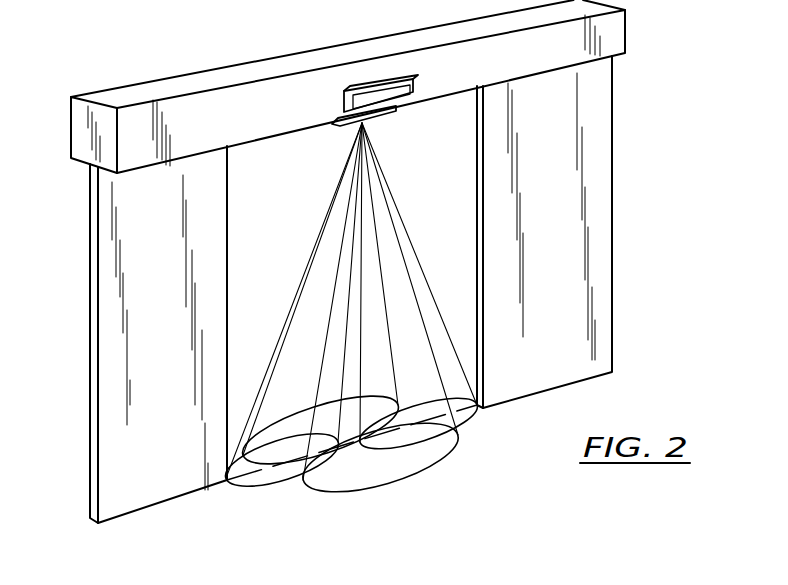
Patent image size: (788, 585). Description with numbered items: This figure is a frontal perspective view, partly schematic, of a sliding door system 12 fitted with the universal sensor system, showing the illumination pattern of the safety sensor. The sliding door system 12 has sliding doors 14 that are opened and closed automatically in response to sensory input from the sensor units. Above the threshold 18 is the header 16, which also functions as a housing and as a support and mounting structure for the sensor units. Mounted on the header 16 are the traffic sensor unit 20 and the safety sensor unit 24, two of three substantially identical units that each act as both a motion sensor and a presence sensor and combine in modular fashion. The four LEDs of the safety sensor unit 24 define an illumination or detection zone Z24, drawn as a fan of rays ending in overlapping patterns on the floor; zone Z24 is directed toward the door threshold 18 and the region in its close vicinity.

The sliding door system 12 is at (149, 75).
The sliding doors 14 is at (90, 310).
The header 16 is at (626, 27).
The threshold 18 is at (467, 411).
The traffic sensor unit 20 is at (405, 89).
The safety sensor unit 24 is at (377, 119).
The illumination or detection zone Z24 is at (327, 245).